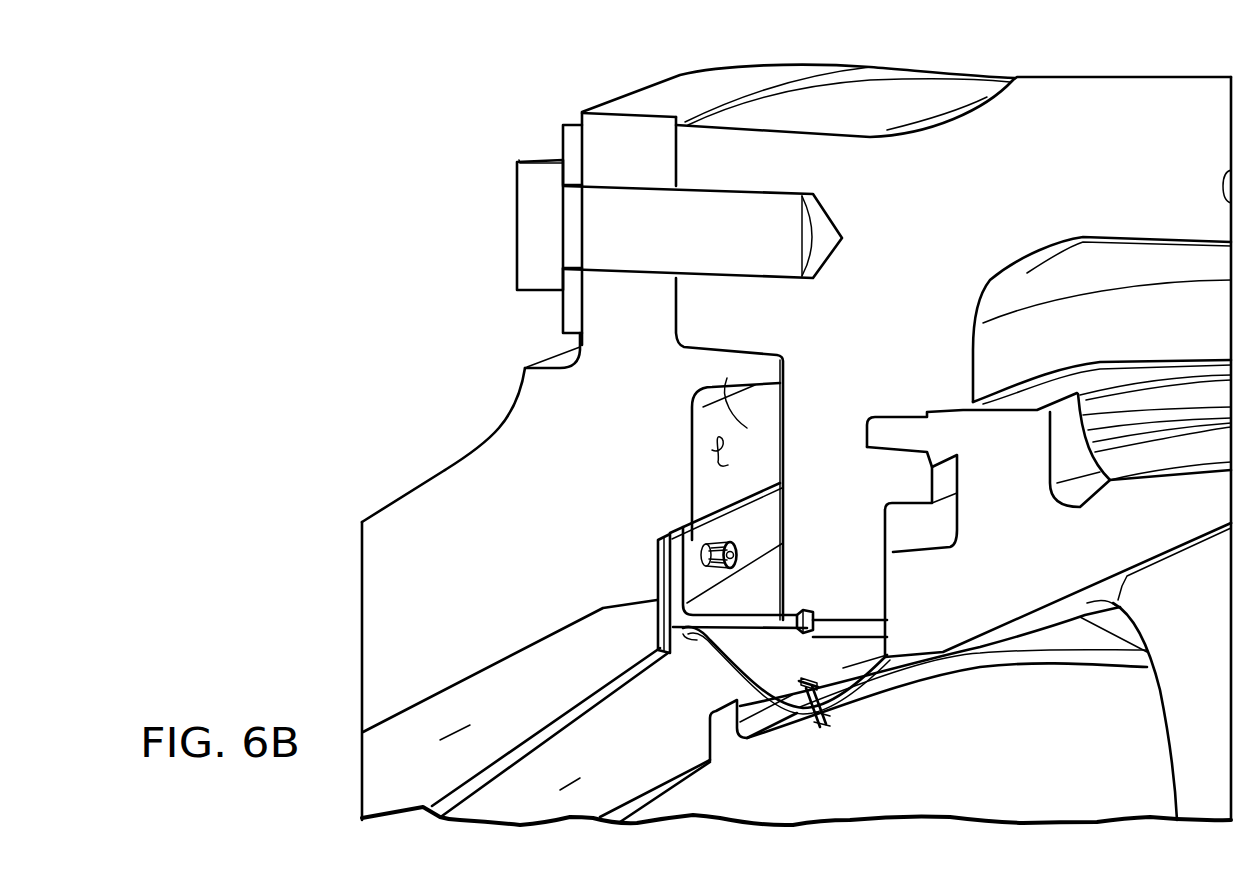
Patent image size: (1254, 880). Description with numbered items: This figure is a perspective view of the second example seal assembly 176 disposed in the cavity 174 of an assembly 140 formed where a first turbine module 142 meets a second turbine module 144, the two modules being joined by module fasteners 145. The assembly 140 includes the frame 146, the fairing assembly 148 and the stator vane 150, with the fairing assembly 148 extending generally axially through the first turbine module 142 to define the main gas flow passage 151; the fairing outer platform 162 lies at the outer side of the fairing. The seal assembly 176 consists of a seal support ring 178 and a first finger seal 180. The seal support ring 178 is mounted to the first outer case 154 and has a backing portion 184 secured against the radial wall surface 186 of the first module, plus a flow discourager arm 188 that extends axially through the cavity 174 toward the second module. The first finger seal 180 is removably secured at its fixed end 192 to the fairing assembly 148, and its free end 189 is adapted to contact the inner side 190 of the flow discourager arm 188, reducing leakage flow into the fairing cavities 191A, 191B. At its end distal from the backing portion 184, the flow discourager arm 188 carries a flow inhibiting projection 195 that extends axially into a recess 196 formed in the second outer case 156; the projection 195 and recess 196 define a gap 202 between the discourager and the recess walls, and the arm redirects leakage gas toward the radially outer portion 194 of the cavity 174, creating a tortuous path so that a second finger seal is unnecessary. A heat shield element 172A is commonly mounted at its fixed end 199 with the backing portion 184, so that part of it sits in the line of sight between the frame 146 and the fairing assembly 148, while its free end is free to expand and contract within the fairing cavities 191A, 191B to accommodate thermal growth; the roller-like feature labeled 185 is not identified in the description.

The assembly 140 is at (455, 82).
The first turbine module 142 is at (374, 304).
The second turbine module 144 is at (1008, 68).
The module fasteners 145 is at (545, 233).
The frame 146 is at (343, 422).
The fairing assembly 148 is at (716, 796).
The stator vane 150 is at (1029, 551).
The main gas flow passage 151 is at (982, 771).
The first outer case 154 is at (451, 590).
The second outer case 156 is at (878, 353).
The fairing outer platform 162 is at (657, 797).
The heat shield element 172A is at (502, 763).
The cavity 174 is at (677, 388).
The seal assembly 176 is at (705, 688).
The seal support ring 178 is at (661, 522).
The first finger seal 180 is at (877, 690).
The backing portion 184 is at (668, 587).
The roller 185 is at (716, 540).
The radial wall surface 186 is at (712, 450).
The flow discourager arm 188 is at (775, 603).
The finger seal free end 189 is at (703, 637).
The flow discourager inner side 190 is at (745, 632).
The fairing cavity 191A is at (533, 714).
The fairing cavity 191B is at (626, 776).
The first finger seal fixed end 192 is at (835, 712).
The annular cavity radially outer portion 194 is at (728, 390).
The flow inhibiting projection 195 is at (803, 610).
The recess 196 is at (812, 612).
The heat shield fixed end 199 is at (660, 597).
The gap 202 is at (822, 612).